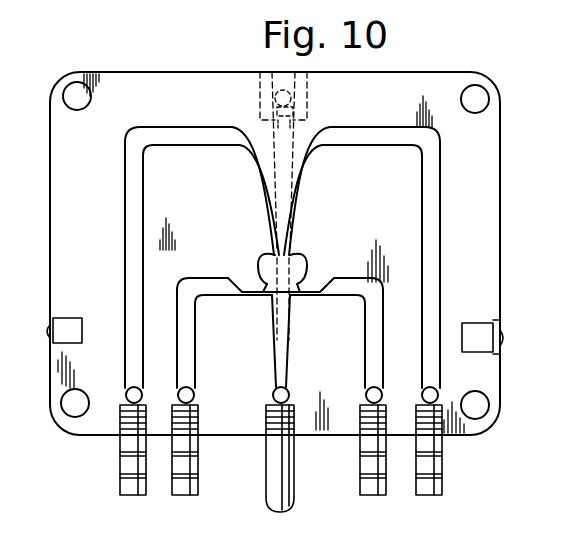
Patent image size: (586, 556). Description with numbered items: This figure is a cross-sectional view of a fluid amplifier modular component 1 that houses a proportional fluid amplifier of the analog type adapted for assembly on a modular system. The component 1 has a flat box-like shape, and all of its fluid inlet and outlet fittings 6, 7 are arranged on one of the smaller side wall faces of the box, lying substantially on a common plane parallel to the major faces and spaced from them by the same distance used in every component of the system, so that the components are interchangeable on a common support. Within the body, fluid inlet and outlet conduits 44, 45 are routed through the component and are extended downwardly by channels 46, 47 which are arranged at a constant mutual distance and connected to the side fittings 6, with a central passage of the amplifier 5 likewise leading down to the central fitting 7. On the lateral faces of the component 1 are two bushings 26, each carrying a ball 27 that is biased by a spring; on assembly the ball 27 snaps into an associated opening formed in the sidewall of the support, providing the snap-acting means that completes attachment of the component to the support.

The fluid amplifier modular component 1 is at (500, 187).
The nozzle / inlet passage 5 is at (282, 181).
The fluid inlet and outlet fitting 6 is at (176, 481).
The fluid inlet and outlet fitting 7 is at (291, 482).
The bushing 26 is at (480, 332).
The ball 27 is at (501, 338).
The fluid inlet and outlet conduit 44 is at (235, 296).
The fluid inlet and outlet conduit 45 is at (357, 146).
The channel 46 is at (186, 366).
The channel 47 is at (132, 283).